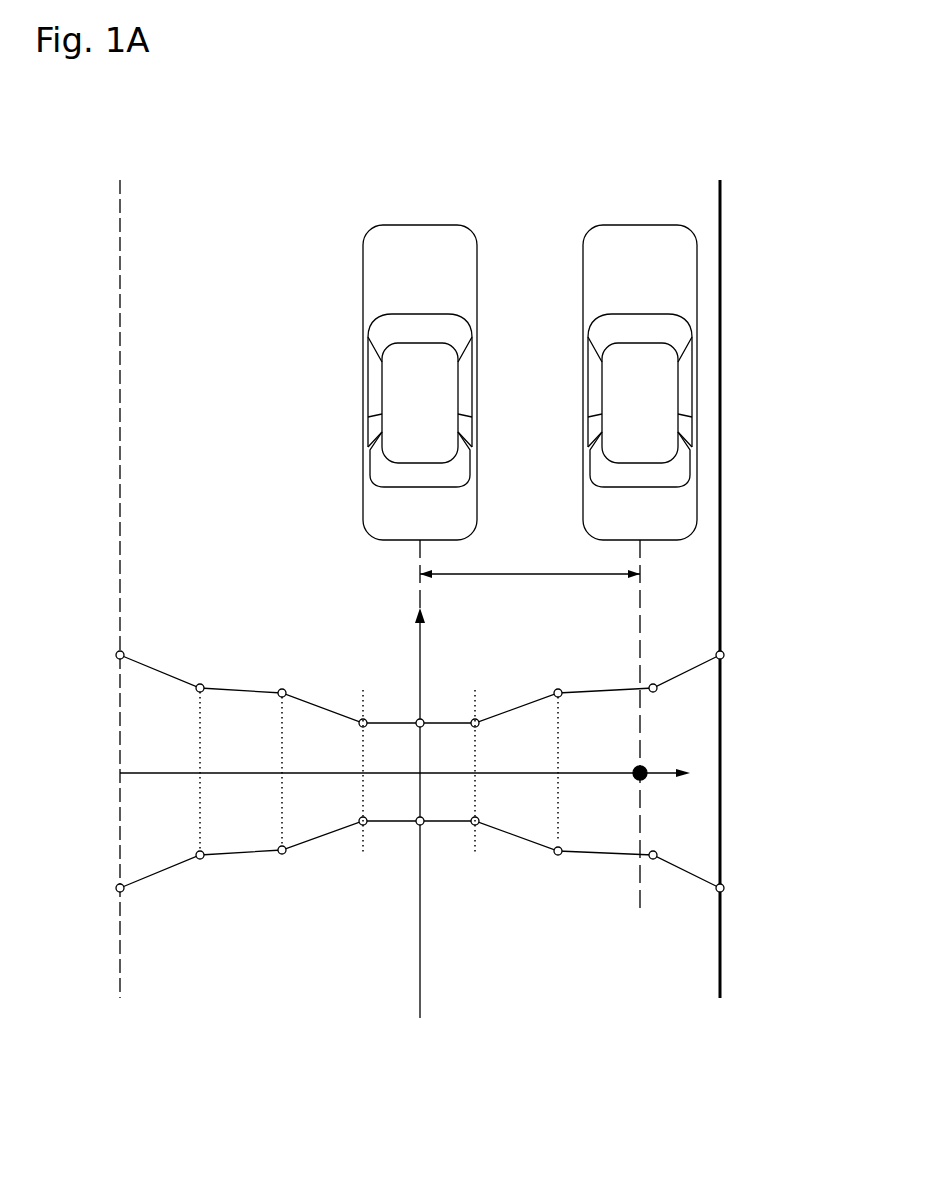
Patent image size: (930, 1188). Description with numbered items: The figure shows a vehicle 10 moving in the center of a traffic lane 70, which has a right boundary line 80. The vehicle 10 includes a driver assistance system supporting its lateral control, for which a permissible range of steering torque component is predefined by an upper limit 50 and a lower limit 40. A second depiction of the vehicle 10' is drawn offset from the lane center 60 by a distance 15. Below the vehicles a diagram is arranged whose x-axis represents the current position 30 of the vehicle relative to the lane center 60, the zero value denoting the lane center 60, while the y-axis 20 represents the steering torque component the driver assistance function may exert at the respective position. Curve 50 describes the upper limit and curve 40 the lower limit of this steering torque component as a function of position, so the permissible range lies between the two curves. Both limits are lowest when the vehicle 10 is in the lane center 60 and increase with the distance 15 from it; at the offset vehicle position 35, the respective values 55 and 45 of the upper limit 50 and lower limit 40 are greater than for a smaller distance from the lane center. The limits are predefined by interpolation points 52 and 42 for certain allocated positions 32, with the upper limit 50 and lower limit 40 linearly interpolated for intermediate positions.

The traffic lane 70 is at (245, 210).
The vehicle 10 is at (420, 347).
The vehicle 10' is at (640, 532).
The right boundary line 80 is at (722, 265).
The distance 15 is at (530, 574).
The longitudinal axis / driving direction 20 is at (425, 648).
The lane center 60 is at (422, 992).
The position 30 is at (158, 775).
The vehicle position 35 is at (640, 773).
The allocated positions 32 is at (367, 772).
The upper limit 50 is at (672, 678).
The interpolation points 52 is at (203, 683).
The value of upper limit 55 is at (641, 687).
The lower limit 40 is at (597, 853).
The interpolation points 42 is at (200, 860).
The value of lower limit 45 is at (641, 856).